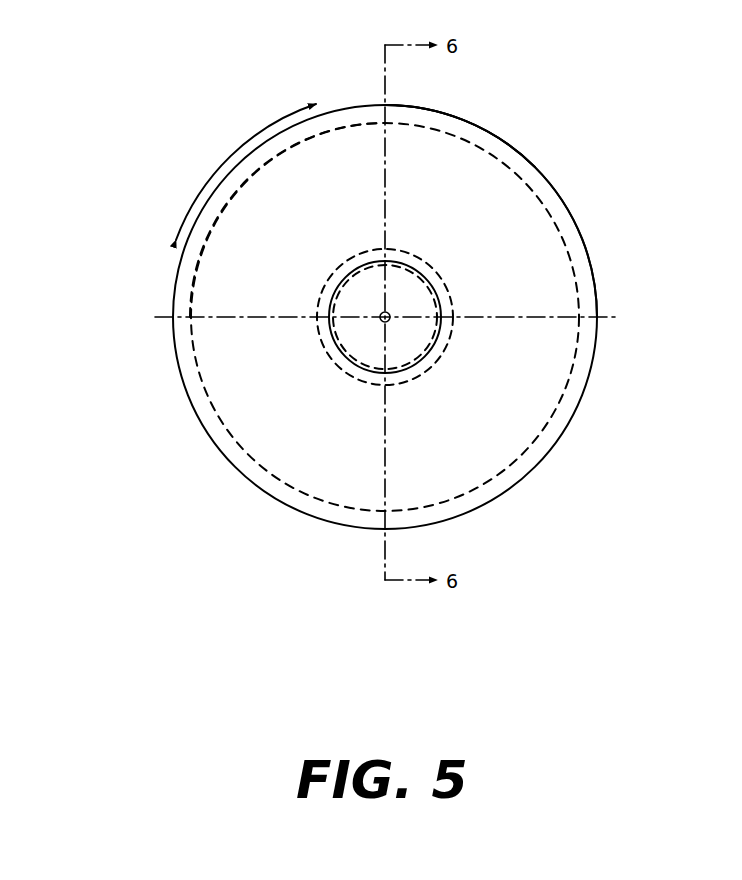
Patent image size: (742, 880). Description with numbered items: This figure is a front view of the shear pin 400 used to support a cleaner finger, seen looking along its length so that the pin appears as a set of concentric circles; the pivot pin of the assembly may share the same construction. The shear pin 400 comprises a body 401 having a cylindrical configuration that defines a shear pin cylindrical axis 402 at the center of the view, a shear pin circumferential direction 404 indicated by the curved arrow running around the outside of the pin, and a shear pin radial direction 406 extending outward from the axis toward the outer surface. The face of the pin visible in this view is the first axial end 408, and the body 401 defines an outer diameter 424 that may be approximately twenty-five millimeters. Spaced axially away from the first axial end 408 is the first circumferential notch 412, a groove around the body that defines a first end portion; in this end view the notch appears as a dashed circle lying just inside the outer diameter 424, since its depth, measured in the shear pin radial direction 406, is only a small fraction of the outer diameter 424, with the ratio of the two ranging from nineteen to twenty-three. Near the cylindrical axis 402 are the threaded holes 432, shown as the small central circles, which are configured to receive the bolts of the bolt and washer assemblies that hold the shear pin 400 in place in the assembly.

The shear pin 400 is at (597, 160).
The body 401 is at (594, 244).
The shear pin cylindrical axis 402 is at (389, 320).
The shear pin circumferential direction 404 is at (232, 152).
The shear pin radial direction 406 is at (560, 318).
The first axial end 408 is at (279, 384).
The first circumferential notch 412 is at (350, 118).
The outer diameter 424 is at (514, 139).
The threaded holes 432 is at (363, 378).